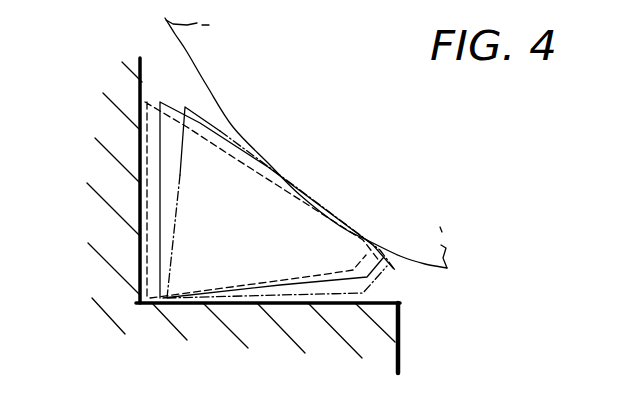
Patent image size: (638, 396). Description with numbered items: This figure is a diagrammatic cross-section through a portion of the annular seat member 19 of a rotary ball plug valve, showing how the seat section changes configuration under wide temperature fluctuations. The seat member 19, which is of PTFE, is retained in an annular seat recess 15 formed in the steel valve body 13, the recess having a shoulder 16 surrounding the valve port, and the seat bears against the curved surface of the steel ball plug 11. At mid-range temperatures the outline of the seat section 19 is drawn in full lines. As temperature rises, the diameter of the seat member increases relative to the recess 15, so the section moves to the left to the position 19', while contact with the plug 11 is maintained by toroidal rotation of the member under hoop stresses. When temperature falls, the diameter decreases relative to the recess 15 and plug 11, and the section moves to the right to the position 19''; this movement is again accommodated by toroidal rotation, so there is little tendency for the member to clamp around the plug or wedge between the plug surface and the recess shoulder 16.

The ball plug 11 is at (306, 143).
The valve body 13 is at (233, 315).
The annular seat recess 15 is at (142, 92).
The recess shoulder 16 is at (392, 303).
The seat member 19 is at (226, 200).
The seat member position at increased temperature 19' is at (218, 200).
The seat member position at lowered temperature 19'' is at (224, 202).